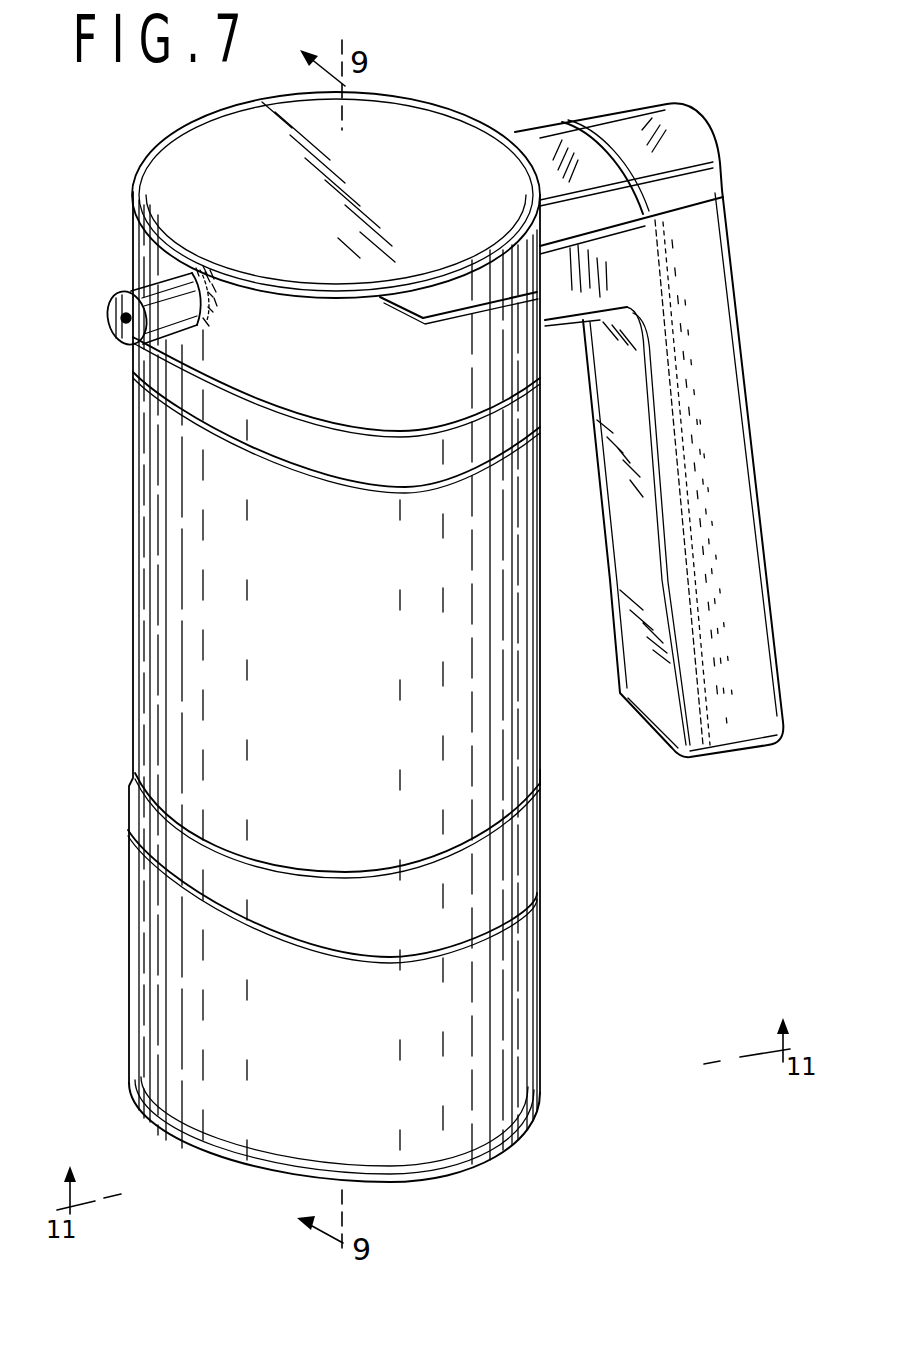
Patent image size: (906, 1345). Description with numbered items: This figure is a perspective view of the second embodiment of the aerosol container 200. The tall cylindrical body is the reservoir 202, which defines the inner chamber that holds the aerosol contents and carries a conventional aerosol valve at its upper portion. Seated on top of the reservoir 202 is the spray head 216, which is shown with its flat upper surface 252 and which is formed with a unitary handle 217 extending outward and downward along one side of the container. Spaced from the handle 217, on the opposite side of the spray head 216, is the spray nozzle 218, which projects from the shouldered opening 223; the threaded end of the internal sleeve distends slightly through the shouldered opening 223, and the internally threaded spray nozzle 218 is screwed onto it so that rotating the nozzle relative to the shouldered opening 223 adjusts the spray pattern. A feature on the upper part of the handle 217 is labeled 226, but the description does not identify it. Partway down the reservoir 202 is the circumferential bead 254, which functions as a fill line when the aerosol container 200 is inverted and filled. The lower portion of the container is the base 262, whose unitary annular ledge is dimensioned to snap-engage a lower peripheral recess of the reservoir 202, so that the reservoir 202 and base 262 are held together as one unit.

The aerosol container 200 is at (92, 548).
The reservoir 202 is at (344, 651).
The spray head 216 is at (340, 378).
The unitary handle 217 is at (722, 417).
The spray nozzle 218 is at (128, 290).
The shouldered opening 223 is at (200, 270).
The handle ridge 226 is at (627, 133).
The flat upper surface 252 is at (312, 200).
The circumferential bead 254 is at (542, 774).
The base 262 is at (320, 1070).